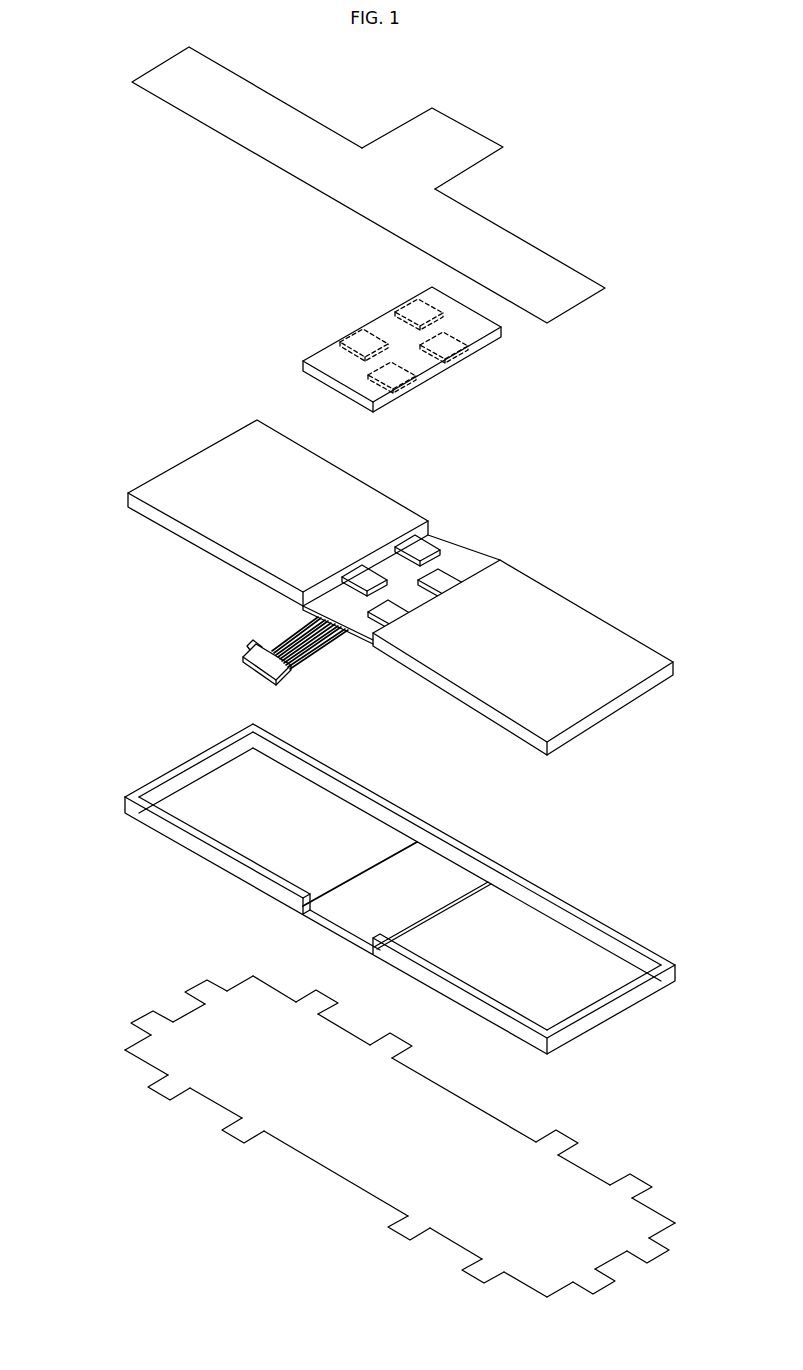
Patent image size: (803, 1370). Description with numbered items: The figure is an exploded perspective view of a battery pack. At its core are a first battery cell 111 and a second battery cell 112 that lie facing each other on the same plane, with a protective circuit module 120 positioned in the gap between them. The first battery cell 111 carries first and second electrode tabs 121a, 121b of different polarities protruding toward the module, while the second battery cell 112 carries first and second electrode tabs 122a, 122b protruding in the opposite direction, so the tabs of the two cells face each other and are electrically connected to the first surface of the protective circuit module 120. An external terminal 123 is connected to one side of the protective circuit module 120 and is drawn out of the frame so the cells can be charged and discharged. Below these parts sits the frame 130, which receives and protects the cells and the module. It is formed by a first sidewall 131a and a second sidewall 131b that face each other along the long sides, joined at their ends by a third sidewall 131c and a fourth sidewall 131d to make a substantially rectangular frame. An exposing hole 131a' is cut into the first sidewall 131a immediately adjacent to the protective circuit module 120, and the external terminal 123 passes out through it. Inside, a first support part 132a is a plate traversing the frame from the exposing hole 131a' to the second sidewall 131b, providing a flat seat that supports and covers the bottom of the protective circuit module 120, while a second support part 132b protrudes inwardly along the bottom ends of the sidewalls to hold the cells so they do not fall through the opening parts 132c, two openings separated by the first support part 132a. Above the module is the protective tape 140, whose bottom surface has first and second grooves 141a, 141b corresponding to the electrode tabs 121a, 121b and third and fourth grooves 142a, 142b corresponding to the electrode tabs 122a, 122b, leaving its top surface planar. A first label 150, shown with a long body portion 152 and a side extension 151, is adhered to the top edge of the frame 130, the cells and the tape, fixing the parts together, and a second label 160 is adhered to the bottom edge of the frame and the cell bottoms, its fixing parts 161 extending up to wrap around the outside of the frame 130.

The first battery cell 111 is at (568, 612).
The second battery cell 112 is at (337, 478).
The protective circuit module 120 is at (457, 552).
The first electrode tab 121a is at (368, 613).
The second electrode tab 121b is at (447, 585).
The first electrode tab 122a is at (360, 579).
The second electrode tab 122b is at (404, 537).
The external terminal 123 is at (250, 648).
The frame 130 is at (121, 765).
The first sidewall 131a is at (336, 925).
The exposing hole 131a' is at (328, 891).
The second sidewall 131b is at (342, 772).
The third sidewall 131c is at (192, 755).
The fourth sidewall 131d is at (608, 1010).
The first support part 132a is at (413, 905).
The second support part 132b is at (222, 757).
The opening part 132c is at (373, 835).
The protective tape 140 is at (340, 293).
The first groove 141a is at (391, 375).
The second groove 141b is at (441, 343).
The third groove 142a is at (366, 340).
The fourth groove 142b is at (413, 310).
The first label 150 is at (551, 197).
The protruding portion 151 is at (410, 130).
The body portion 152 is at (268, 105).
The second label 160 is at (330, 1166).
The fixing parts 161 is at (237, 1135).